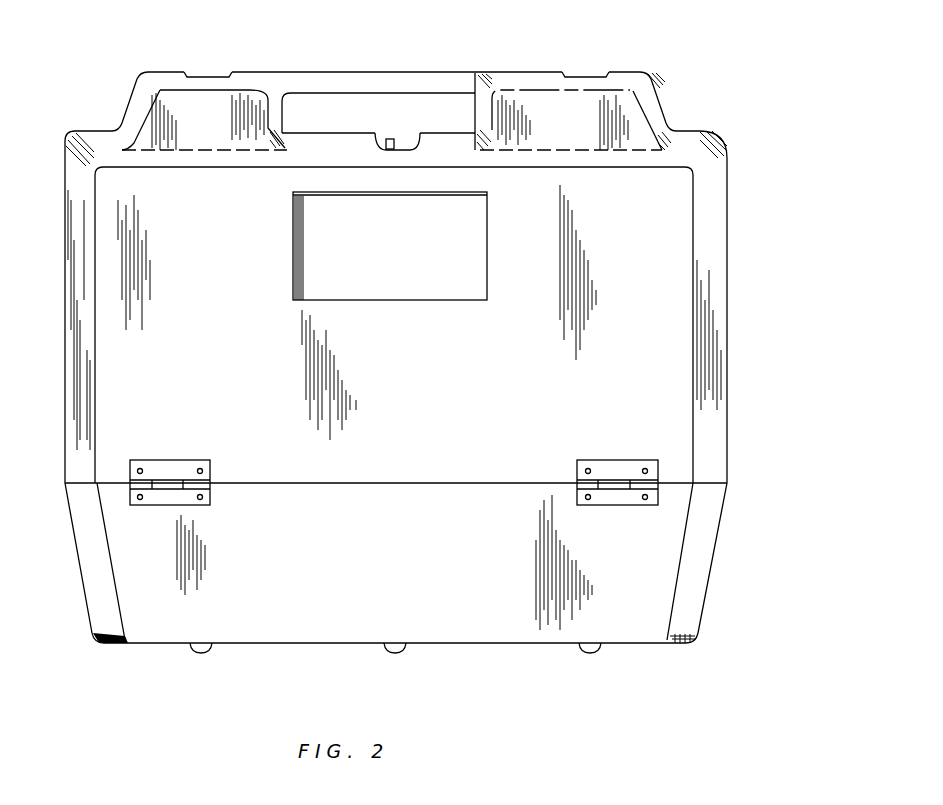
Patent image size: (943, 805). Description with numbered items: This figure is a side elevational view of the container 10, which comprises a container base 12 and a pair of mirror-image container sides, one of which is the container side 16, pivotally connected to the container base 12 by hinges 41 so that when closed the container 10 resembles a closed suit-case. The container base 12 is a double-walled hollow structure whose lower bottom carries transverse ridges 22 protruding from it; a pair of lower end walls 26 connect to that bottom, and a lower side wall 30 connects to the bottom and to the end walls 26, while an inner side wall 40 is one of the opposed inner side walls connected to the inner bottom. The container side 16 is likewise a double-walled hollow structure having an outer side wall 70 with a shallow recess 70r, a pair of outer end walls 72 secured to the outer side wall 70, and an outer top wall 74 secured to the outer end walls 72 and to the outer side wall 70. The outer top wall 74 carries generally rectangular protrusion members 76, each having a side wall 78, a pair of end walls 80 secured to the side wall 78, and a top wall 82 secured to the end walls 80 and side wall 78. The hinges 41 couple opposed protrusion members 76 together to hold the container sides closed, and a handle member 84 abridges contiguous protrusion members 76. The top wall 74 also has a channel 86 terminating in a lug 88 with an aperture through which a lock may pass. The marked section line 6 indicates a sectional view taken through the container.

The container 10 is at (757, 128).
The container base 12 is at (712, 578).
The container side 16 is at (665, 338).
The transverse ridges 22 is at (592, 652).
The lower end walls 26 is at (100, 617).
The lower side wall 30 is at (638, 610).
The inner side wall 40 is at (378, 118).
The hinges 41 is at (173, 463).
The section line 6- 6 is at (440, 22).
The outer side wall 70 is at (483, 347).
The shallow recess 70r is at (415, 290).
The outer end walls 72 is at (77, 210).
The outer top wall 74 is at (685, 148).
The protrusion member 76 is at (198, 66).
The side wall 78 is at (217, 128).
The end walls 80 is at (133, 115).
The top wall 82 is at (233, 72).
The handle member 84 is at (297, 78).
The channel 86 is at (382, 148).
The lug 88 is at (388, 143).